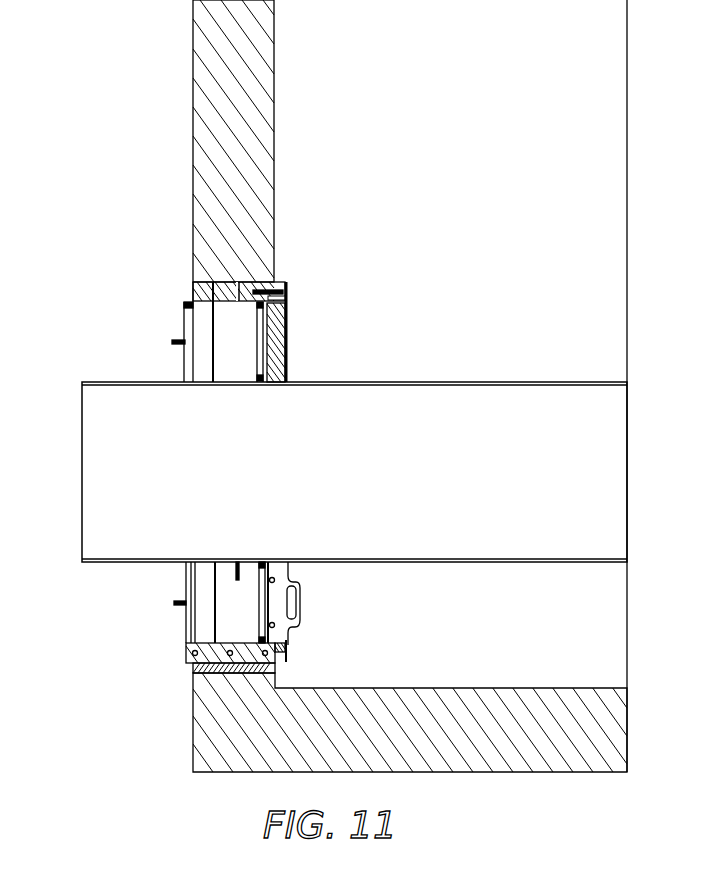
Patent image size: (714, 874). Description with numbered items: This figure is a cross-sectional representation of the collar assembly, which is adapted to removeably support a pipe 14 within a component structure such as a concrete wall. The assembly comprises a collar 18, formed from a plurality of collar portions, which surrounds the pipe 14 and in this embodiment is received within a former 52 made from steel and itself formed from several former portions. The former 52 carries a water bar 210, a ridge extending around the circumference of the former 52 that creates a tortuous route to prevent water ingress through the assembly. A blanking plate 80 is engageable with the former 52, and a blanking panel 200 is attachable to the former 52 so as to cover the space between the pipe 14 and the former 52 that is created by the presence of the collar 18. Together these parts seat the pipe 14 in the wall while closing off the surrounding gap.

The pipe 14 is at (90, 420).
The collar 18 is at (287, 338).
The former 52 is at (190, 656).
The blanking plate 80 is at (198, 293).
The blanking panel 200 is at (203, 620).
The water bar 210 is at (213, 298).